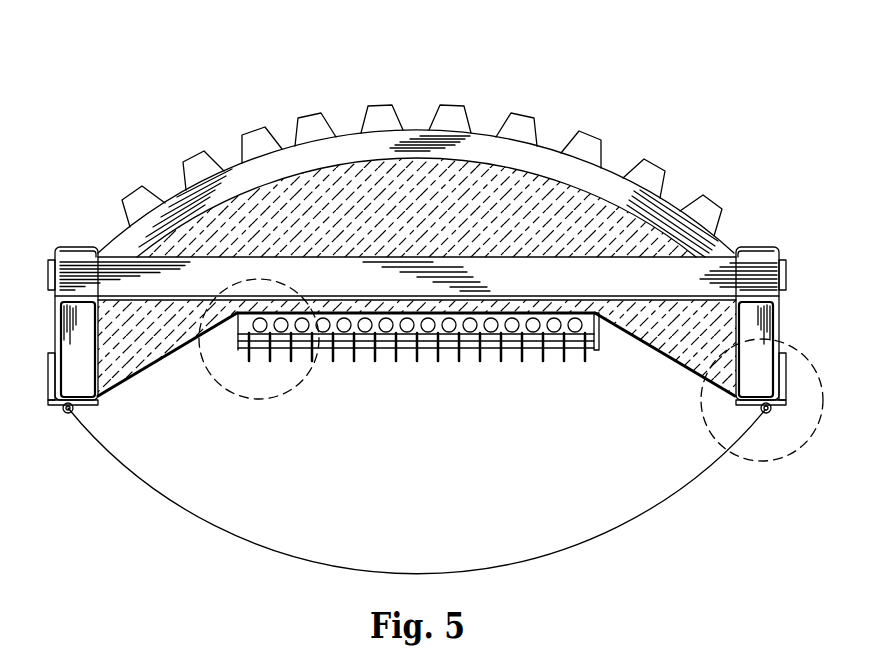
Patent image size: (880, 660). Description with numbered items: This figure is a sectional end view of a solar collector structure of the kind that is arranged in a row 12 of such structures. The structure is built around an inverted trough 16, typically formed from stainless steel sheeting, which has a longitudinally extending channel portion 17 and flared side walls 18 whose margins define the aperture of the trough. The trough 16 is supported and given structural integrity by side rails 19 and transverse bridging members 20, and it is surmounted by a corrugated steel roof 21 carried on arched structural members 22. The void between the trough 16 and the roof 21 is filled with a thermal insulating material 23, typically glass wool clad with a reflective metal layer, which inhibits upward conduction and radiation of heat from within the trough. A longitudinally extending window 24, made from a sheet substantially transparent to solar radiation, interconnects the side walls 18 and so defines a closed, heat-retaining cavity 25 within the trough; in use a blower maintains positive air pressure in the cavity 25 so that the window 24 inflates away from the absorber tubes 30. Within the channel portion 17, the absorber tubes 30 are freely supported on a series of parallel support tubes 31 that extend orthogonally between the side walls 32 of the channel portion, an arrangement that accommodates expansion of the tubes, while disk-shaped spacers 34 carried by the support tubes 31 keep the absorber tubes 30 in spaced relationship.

The row of collector structures 12 is at (606, 98).
The inverted trough 16 is at (672, 378).
The channel portion 17 is at (497, 312).
The flared side walls 18 is at (138, 372).
The side rails 19 is at (68, 335).
The transverse bridging members 20 is at (202, 280).
The corrugated steel roof 21 is at (605, 140).
The arched structural members 22 is at (470, 147).
The thermal insulating material 23 is at (348, 175).
The window 24 is at (205, 520).
The cavity 25 is at (419, 497).
The absorber tubes 30 is at (513, 333).
The support tubes 31 is at (368, 340).
The side walls of the channel portion 32 is at (232, 335).
The disk-shaped spacers 34 is at (545, 373).